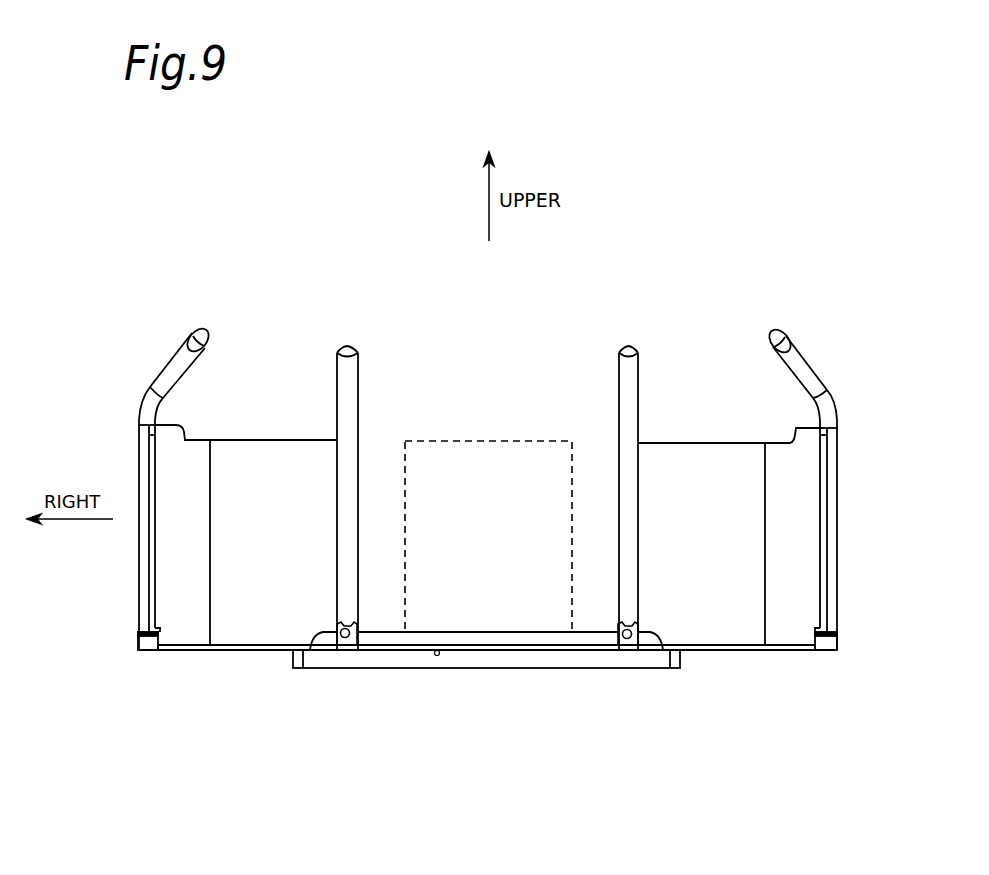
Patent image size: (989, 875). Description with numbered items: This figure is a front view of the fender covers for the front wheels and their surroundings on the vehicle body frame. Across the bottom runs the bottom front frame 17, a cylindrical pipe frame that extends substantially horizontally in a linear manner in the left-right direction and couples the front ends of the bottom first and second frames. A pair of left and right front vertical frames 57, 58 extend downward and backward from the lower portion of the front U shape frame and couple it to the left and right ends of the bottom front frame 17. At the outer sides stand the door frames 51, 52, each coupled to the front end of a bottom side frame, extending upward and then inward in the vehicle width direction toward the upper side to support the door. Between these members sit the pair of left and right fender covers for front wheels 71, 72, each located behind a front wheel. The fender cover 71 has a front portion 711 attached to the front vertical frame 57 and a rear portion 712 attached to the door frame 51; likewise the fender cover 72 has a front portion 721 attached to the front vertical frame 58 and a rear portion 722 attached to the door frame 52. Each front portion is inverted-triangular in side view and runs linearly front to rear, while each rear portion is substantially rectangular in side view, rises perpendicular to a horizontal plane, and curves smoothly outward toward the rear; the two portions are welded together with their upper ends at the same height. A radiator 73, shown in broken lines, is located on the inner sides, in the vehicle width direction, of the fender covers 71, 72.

The bottom front frame 17 is at (380, 658).
The door frame 51 is at (142, 567).
The door frame 52 is at (830, 543).
The front vertical frame 57 is at (345, 550).
The front vertical frame 58 is at (630, 552).
The fender cover for front wheel 71 is at (255, 563).
The front portion 711 is at (335, 535).
The rear portion 712 is at (196, 588).
The fender cover for front wheel 72 is at (720, 563).
The front portion 721 is at (637, 538).
The rear portion 722 is at (792, 585).
The radiator 73 is at (488, 608).